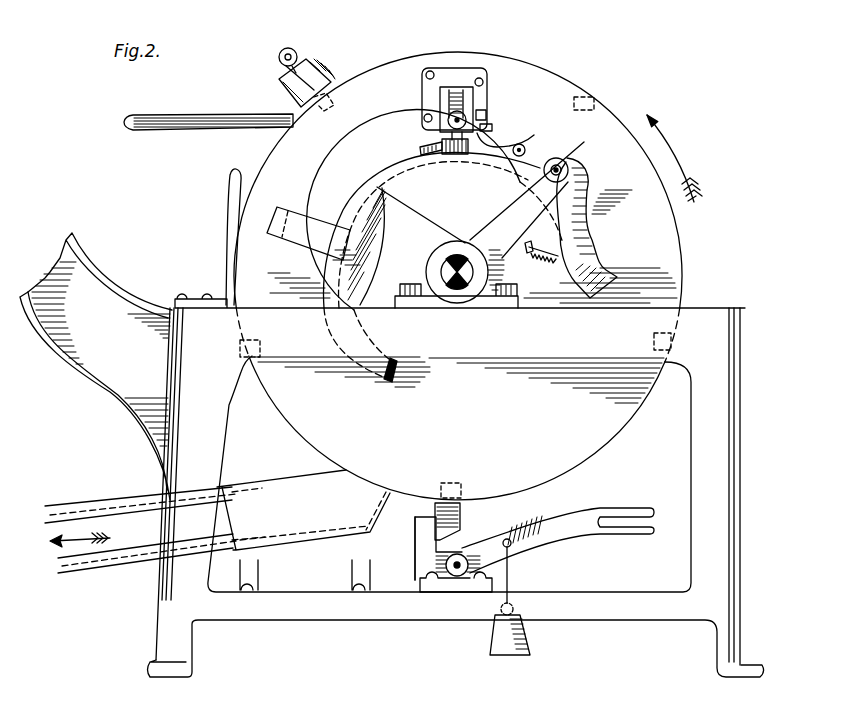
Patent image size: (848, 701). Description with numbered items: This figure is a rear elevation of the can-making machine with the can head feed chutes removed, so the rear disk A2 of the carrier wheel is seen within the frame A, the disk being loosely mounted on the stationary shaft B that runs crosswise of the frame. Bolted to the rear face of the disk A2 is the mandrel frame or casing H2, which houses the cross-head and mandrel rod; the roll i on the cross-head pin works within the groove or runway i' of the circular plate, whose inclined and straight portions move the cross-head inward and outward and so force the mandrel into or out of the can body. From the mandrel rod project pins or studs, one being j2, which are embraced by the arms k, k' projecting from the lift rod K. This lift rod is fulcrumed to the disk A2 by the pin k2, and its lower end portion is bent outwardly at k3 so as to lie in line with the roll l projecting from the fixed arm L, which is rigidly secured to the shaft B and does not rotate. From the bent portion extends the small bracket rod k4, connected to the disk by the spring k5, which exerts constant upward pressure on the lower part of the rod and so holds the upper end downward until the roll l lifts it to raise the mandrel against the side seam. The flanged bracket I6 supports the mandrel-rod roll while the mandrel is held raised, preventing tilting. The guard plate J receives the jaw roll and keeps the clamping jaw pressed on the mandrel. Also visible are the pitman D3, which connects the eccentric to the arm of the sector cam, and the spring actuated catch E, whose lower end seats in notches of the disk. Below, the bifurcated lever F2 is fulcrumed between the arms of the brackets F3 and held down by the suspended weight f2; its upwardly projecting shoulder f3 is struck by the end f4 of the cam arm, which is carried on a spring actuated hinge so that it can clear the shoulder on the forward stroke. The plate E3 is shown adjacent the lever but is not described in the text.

The frame A is at (456, 485).
The disk A2 is at (664, 248).
The stationary shaft B is at (442, 266).
The fixed arm L is at (499, 207).
The roll l is at (570, 160).
The lift rod K is at (581, 200).
The outwardly bent lower end portion of the lift rod k3 is at (596, 278).
The bracket rod k4 is at (530, 250).
The spring k5 is at (547, 260).
The mandrel frame or casing H2 is at (451, 85).
The arm of the lift rod k is at (498, 98).
The pin or stud j2 is at (487, 118).
The arm of the lift rod k' is at (515, 116).
The pin k2 is at (523, 148).
The roll i is at (455, 164).
The groove or runway i' is at (414, 138).
The bracket I6 is at (347, 228).
The guard plate J is at (226, 220).
The spring actuated catch E is at (283, 62).
The pitman D3 is at (185, 116).
The plate / rails E3 is at (217, 521).
The brackets F3 is at (453, 577).
The shoulder f3 is at (432, 518).
The end of arm f4 is at (460, 523).
The bifurcated lever F2 is at (557, 520).
The suspended weight f2 is at (497, 630).